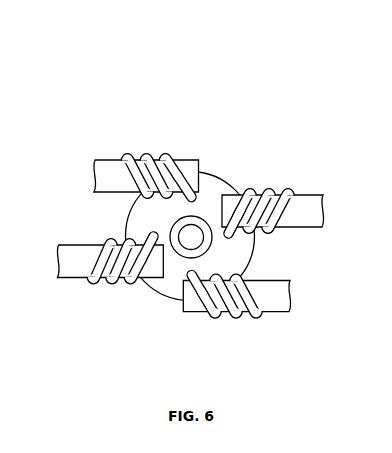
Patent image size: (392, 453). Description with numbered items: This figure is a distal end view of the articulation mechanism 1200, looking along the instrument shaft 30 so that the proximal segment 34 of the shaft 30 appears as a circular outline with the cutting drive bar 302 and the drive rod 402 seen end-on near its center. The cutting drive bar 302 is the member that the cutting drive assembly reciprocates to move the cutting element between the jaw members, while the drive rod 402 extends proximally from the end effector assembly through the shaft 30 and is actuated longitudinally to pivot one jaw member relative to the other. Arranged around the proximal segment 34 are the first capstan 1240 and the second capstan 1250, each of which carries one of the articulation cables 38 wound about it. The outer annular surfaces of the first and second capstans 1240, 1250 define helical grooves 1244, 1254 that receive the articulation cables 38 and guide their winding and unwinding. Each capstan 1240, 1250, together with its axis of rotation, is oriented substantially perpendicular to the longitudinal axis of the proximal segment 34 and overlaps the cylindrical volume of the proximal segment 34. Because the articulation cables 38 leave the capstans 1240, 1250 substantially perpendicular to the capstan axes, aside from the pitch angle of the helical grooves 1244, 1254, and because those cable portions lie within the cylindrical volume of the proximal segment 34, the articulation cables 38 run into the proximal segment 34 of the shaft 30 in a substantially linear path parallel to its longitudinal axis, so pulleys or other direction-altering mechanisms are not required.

The articulation mechanism 1200 is at (191, 195).
The shaft 30 is at (191, 217).
The proximal segment 34 is at (210, 175).
The articulation cables 38 is at (123, 172).
The cutting drive bar 302 is at (170, 218).
The drive rod 402 is at (200, 247).
The first capstan 1240 is at (130, 155).
The helical groove 1244 is at (166, 155).
The second capstan 1250 is at (258, 197).
The helical groove 1254 is at (281, 199).